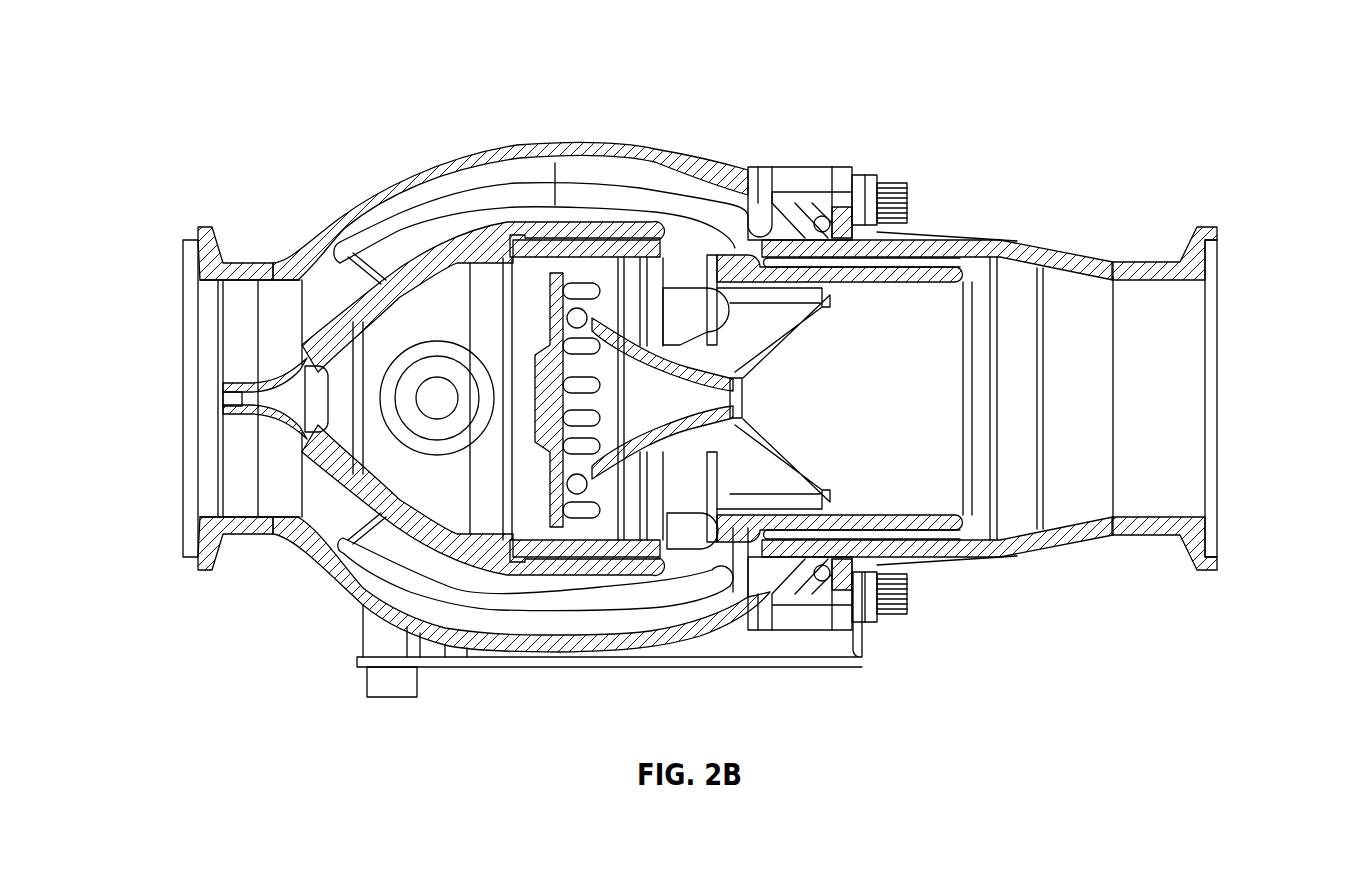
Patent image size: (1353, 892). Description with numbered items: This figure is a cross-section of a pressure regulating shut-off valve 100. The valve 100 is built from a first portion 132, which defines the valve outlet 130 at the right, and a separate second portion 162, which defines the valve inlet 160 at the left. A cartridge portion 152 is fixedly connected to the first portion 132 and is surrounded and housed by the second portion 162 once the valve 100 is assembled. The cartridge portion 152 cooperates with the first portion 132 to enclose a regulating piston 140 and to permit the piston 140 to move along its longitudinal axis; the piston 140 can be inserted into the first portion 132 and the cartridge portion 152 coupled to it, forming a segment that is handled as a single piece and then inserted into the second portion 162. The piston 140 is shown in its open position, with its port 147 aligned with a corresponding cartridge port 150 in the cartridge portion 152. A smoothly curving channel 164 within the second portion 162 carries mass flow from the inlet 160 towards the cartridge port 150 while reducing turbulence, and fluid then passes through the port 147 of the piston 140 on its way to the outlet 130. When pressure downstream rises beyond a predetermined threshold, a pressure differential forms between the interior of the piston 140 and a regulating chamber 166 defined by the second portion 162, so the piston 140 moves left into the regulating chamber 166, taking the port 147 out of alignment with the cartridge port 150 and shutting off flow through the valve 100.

The pressure regulating shut-off valve 100 is at (702, 403).
The valve outlet 130 is at (1218, 400).
The first portion 132 is at (1098, 412).
The regulating piston 140 is at (889, 412).
The port 147 is at (690, 303).
The cartridge port 150 is at (693, 545).
The cartridge portion 152 is at (600, 242).
The valve inlet 160 is at (183, 400).
The second portion 162 is at (325, 522).
The channel 164 is at (407, 250).
The regulating chamber 166 is at (447, 318).